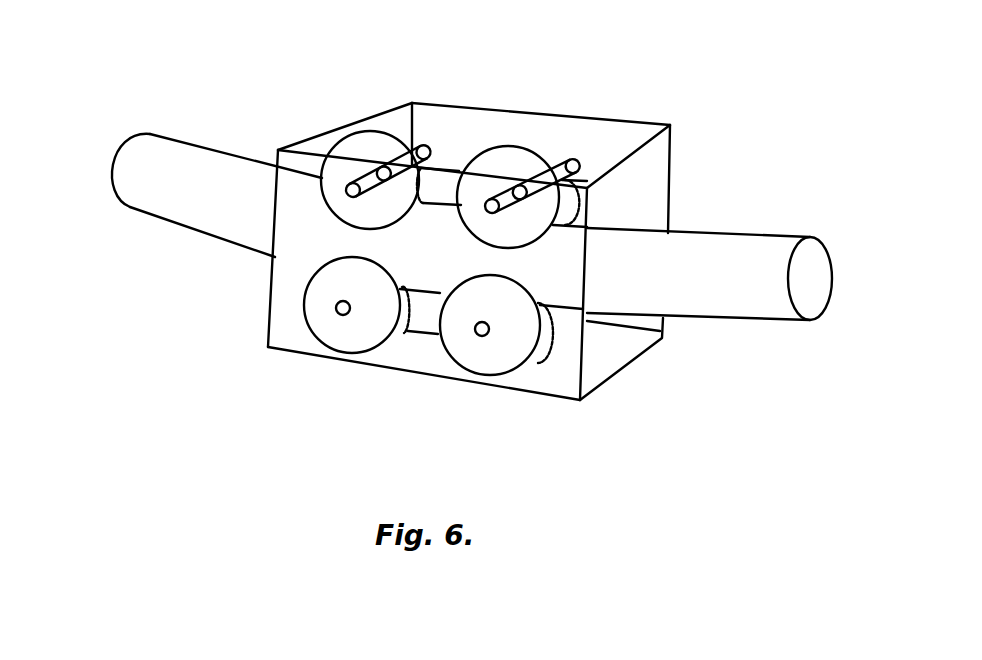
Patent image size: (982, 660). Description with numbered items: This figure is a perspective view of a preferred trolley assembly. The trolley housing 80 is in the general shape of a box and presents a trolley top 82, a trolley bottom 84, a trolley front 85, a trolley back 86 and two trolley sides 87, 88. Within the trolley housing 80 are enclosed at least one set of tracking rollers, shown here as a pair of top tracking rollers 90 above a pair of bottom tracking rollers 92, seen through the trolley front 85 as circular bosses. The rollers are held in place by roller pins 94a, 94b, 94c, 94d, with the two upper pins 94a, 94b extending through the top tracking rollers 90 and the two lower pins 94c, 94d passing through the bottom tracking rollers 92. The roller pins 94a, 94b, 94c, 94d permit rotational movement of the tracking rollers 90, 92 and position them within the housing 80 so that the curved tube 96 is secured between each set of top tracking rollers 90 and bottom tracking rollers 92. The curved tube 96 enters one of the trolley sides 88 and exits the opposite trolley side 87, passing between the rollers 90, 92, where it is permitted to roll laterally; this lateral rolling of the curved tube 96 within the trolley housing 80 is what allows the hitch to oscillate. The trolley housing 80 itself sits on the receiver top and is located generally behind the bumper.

The trolley housing 80 is at (447, 82).
The trolley top 82 is at (660, 124).
The trolley bottom 84 is at (571, 383).
The trolley front 85 is at (280, 325).
The trolley back 86 is at (480, 125).
The trolley side 87 is at (672, 190).
The trolley side 88 is at (333, 137).
The top tracking rollers 90 is at (368, 143).
The bottom tracking rollers 92 is at (357, 347).
The roller pin 94a is at (348, 190).
The roller pin 94b is at (496, 209).
The roller pin 94c is at (488, 332).
The roller pin 94d is at (336, 307).
The curved tube 96 is at (132, 172).